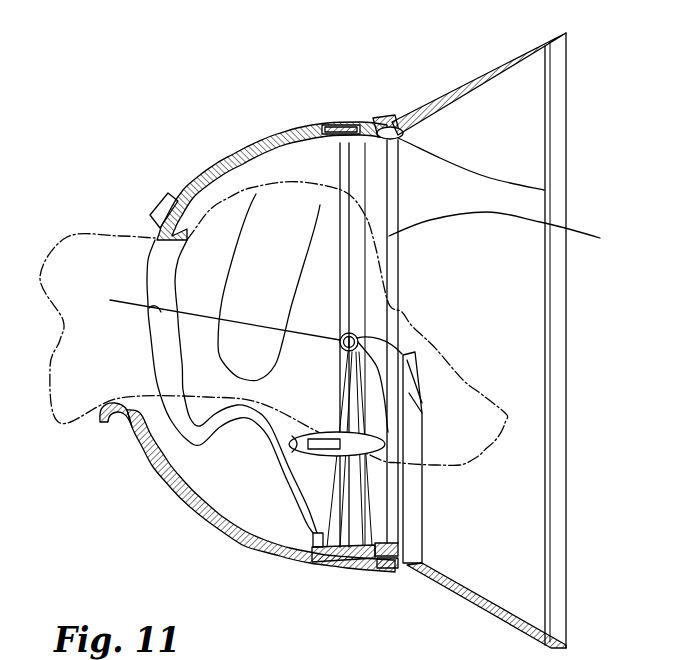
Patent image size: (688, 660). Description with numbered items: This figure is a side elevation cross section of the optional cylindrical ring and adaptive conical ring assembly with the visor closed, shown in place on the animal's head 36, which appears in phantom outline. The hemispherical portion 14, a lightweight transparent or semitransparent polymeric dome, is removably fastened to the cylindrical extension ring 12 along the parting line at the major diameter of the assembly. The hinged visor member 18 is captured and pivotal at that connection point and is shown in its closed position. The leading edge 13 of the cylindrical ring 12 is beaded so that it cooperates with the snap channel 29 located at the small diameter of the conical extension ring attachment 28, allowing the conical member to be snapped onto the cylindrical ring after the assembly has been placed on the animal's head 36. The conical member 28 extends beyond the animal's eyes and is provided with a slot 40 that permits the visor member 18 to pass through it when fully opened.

The cylindrical extension ring 12 is at (370, 557).
The leading edge 13 is at (600, 238).
The hemispherical portion 14 is at (208, 176).
The visor member 18 is at (207, 515).
The conical extension ring attachment 28 is at (519, 125).
The snap channel 29 is at (544, 190).
The animal's head 36 is at (282, 242).
The slot 40 is at (404, 518).